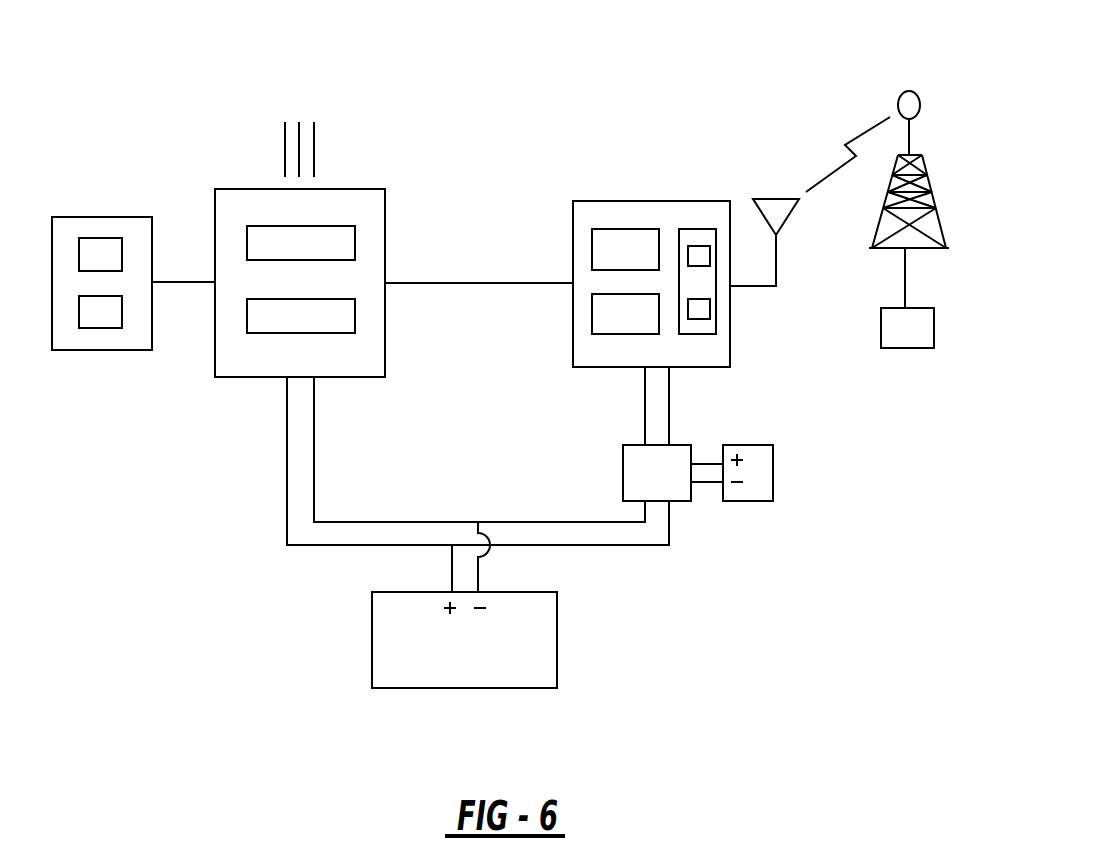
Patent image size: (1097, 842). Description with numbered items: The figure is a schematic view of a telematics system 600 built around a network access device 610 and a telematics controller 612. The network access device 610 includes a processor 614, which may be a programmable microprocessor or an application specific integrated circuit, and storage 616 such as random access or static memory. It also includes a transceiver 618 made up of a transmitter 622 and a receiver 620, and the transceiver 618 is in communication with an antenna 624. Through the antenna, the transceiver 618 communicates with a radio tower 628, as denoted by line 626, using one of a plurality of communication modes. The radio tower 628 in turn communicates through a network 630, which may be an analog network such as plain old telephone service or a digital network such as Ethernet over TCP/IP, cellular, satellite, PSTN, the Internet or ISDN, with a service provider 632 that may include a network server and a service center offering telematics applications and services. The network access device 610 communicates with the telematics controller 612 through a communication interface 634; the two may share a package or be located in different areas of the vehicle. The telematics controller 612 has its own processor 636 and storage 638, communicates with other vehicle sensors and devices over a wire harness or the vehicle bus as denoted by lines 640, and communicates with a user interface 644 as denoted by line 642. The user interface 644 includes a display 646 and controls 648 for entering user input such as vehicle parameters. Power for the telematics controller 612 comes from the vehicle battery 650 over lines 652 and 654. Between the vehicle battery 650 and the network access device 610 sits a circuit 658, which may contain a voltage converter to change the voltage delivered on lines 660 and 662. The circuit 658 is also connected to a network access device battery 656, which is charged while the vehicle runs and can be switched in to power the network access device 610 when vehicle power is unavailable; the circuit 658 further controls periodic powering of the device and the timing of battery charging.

The telematics system 600 is at (668, 55).
The network access device 610 is at (611, 201).
The telematics controller 612 is at (366, 189).
The processor 614 is at (592, 255).
The storage 616 is at (592, 313).
The transceiver 618 is at (700, 334).
The receiver 620 is at (716, 305).
The transmitter 622 is at (699, 246).
The antenna 624 is at (776, 252).
The communication line 626 is at (860, 132).
The radio tower 628 is at (912, 138).
The network 630 is at (905, 278).
The service provider 632 is at (915, 348).
The communication interface 634 is at (525, 283).
The processor 636 is at (355, 243).
The storage 638 is at (355, 315).
The lines 640 is at (330, 148).
The line 642 is at (183, 283).
The user interface 644 is at (132, 217).
The display 646 is at (97, 238).
The controls 648 is at (100, 328).
The vehicle battery 650 is at (372, 630).
The line 652 is at (287, 422).
The line 654 is at (314, 475).
The network access device battery 656 is at (773, 468).
The circuit 658 is at (623, 478).
The line 660 is at (645, 413).
The line 662 is at (669, 398).